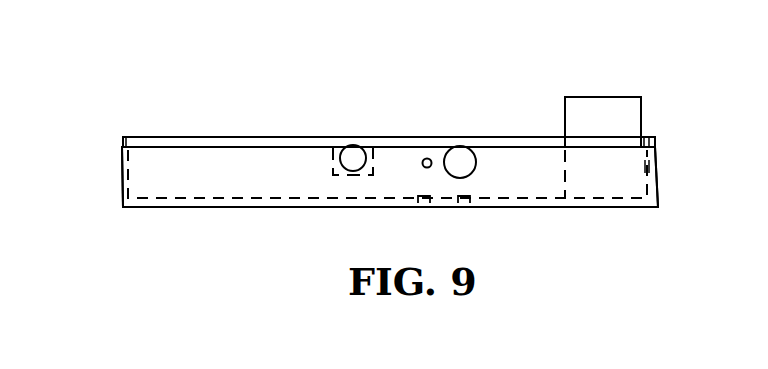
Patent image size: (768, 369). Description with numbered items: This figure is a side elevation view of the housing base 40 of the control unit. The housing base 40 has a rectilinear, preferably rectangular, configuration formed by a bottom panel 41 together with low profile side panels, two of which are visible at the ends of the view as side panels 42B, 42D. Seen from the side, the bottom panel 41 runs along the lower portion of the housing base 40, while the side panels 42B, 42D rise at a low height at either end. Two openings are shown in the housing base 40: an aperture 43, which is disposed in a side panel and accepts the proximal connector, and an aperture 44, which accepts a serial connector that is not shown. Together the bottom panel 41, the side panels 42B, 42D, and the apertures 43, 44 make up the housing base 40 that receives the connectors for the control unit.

The housing base 40 is at (462, 98).
The bottom panel 41 is at (230, 198).
The side panel 42B is at (658, 173).
The side panel 42D is at (122, 175).
The aperture 43 is at (462, 165).
The aperture 44 is at (352, 153).